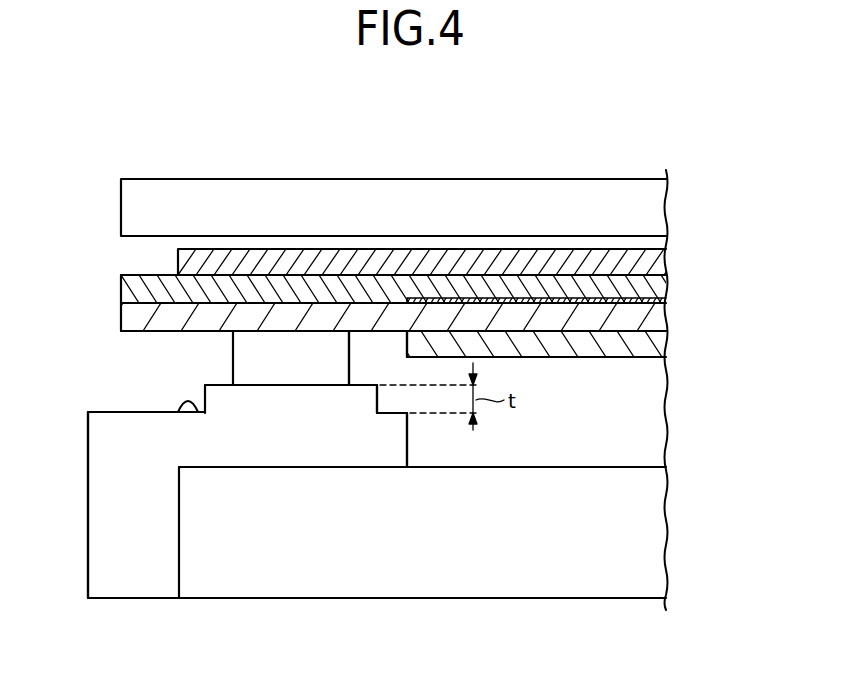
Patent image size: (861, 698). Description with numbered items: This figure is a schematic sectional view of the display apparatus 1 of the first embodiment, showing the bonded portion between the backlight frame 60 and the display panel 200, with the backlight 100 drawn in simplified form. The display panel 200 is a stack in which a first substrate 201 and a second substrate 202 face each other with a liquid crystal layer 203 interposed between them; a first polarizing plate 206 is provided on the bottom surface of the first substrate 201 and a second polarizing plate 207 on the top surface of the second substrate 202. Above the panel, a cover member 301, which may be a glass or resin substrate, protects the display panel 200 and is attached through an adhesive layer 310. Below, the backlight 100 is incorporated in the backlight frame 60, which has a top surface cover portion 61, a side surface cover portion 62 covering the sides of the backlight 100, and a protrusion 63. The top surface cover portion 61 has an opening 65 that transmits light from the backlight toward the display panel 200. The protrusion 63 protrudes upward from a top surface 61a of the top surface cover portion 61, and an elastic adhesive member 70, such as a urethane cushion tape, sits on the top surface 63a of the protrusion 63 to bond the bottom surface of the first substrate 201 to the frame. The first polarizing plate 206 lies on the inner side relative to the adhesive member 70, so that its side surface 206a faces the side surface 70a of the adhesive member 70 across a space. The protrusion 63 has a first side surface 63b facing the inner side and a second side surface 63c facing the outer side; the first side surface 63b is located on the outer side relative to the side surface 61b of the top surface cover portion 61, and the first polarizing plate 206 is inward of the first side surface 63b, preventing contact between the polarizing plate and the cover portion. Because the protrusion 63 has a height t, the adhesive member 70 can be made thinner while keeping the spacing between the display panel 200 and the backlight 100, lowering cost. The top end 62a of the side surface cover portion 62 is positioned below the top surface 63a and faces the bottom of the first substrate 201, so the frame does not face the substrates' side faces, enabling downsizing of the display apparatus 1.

The display apparatus 1 is at (703, 125).
The cover member 301 is at (523, 208).
The adhesive layer 310 is at (463, 243).
The display panel 200 is at (757, 202).
The second polarizing plate 207 is at (658, 263).
The second substrate 202 is at (658, 290).
The liquid crystal layer 203 is at (658, 300).
The first substrate 201 is at (658, 317).
The first polarizing plate 206 is at (658, 347).
The side surface of the first polarizing plate 206a is at (407, 338).
The adhesive member 70 is at (288, 357).
The side surface of the adhesive member 70a is at (350, 355).
The protrusion 63 is at (218, 384).
The top surface of the protrusion 63a is at (232, 384).
The first side surface 63b is at (380, 398).
The second side surface 63c is at (203, 398).
The backlight frame 60 is at (88, 437).
The side surface cover portion 62 is at (88, 492).
The top end of the side surface cover portion 62a is at (105, 412).
The top surface cover portion 61 is at (287, 467).
The top surface of the top surface cover portion 61a is at (204, 414).
The side surface of the top surface cover portion 61b is at (408, 455).
The backlight 100 is at (392, 605).
The opening 65 is at (646, 410).